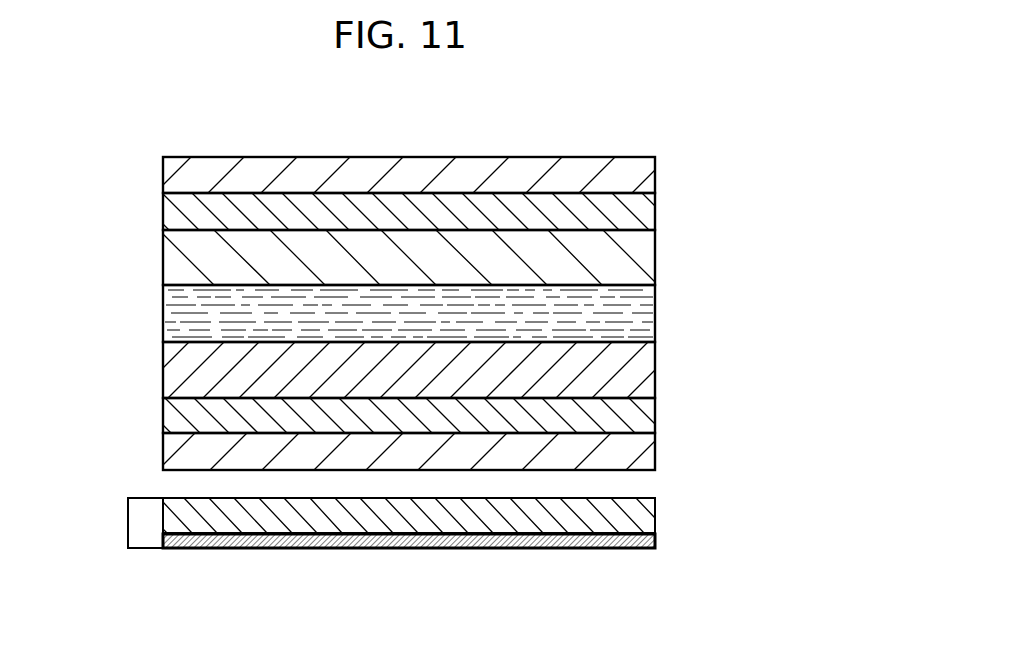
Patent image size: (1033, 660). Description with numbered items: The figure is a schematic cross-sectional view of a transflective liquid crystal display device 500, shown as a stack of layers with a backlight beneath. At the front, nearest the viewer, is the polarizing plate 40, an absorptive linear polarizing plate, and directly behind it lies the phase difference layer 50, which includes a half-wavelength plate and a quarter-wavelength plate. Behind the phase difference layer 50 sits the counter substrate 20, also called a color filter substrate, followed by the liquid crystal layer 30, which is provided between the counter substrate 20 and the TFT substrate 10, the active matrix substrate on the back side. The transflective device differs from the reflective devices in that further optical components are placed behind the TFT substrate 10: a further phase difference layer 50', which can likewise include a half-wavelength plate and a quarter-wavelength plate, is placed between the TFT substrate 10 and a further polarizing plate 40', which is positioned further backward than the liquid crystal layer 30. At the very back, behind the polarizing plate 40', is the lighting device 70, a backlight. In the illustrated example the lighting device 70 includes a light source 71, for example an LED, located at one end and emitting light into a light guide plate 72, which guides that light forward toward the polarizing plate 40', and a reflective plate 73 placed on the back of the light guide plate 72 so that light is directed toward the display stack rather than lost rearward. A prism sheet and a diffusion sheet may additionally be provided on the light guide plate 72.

The liquid crystal display device 500 is at (664, 113).
The polarizing plate 40 is at (375, 176).
The phase difference layer 50 is at (375, 212).
The counter substrate 20 is at (150, 232).
The liquid crystal layer 30 is at (150, 287).
The TFT substrate 10 is at (150, 344).
The further phase difference layer 50' is at (375, 415).
The further polarizing plate 40' is at (375, 451).
The lighting device 70 is at (387, 559).
The light source 71 is at (146, 541).
The light guide plate 72 is at (657, 511).
The reflective plate 73 is at (411, 549).